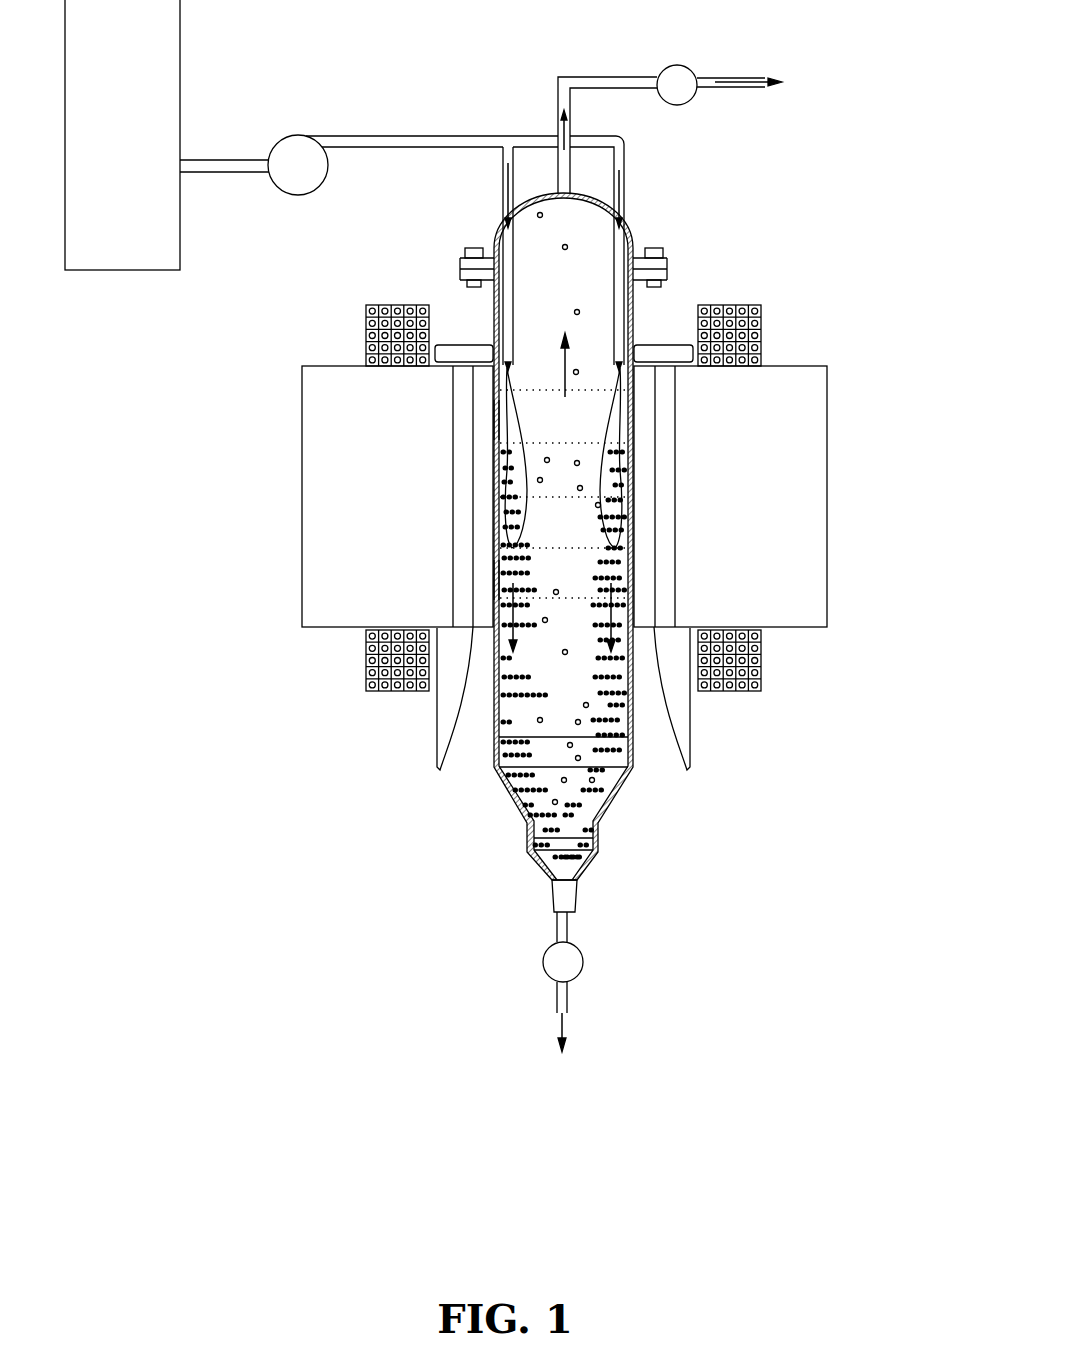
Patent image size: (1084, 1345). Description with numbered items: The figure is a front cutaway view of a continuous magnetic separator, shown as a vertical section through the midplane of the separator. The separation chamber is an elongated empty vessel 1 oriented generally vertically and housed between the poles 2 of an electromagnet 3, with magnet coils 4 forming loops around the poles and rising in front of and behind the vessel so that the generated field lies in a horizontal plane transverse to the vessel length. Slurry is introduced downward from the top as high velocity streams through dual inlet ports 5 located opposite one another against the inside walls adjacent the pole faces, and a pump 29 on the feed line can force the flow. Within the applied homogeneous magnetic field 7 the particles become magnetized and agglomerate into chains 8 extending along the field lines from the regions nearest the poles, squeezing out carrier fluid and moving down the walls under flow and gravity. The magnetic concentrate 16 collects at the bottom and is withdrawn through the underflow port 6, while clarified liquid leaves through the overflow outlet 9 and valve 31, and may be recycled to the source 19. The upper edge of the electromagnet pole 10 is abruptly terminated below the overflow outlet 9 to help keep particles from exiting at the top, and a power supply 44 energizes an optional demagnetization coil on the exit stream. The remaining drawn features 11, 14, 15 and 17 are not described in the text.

The separation vessel 1 is at (567, 618).
The magnet poles 2 is at (430, 718).
The electromagnet 3 is at (835, 510).
The magnet coils 4 is at (697, 688).
The inlet ports 5 is at (627, 172).
The underflow port 6 is at (570, 923).
The applied magnetic field 7 is at (550, 547).
The chains 8 is at (495, 573).
The overflow outlet 9 is at (553, 182).
The upper edge of electromagnet pole 10 is at (668, 366).
The flange 11 is at (815, 202).
The inner wall 14 is at (498, 420).
The gas bubble 15 is at (572, 310).
The magnetic concentrate 16 is at (580, 800).
The conical bottom 17 is at (520, 853).
The source 19 is at (188, 57).
The pump 29 is at (293, 128).
The valve 31 is at (690, 64).
The power supply 44 is at (590, 975).